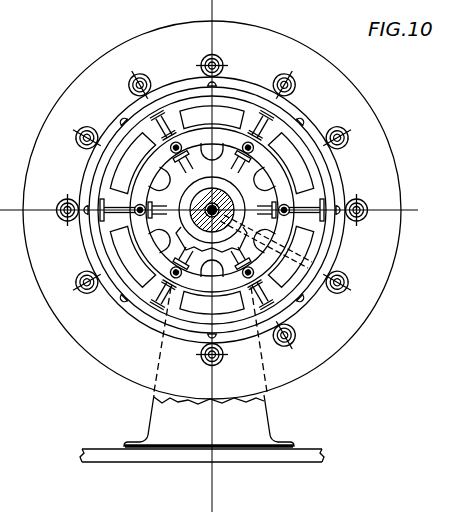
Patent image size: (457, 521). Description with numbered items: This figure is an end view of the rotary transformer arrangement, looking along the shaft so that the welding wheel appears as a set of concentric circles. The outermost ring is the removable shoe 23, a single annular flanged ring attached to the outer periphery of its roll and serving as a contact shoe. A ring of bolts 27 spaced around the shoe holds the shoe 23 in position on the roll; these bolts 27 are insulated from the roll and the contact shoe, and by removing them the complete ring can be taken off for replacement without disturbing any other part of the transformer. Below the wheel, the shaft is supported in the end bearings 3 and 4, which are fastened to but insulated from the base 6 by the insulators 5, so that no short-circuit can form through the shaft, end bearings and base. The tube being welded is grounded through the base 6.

The removable shoe 23 is at (136, 39).
The bolt 27 is at (128, 86).
The end bearing 3 is at (268, 389).
The end bearing 4 is at (237, 402).
The insulator 5 is at (300, 443).
The base 6 is at (327, 463).